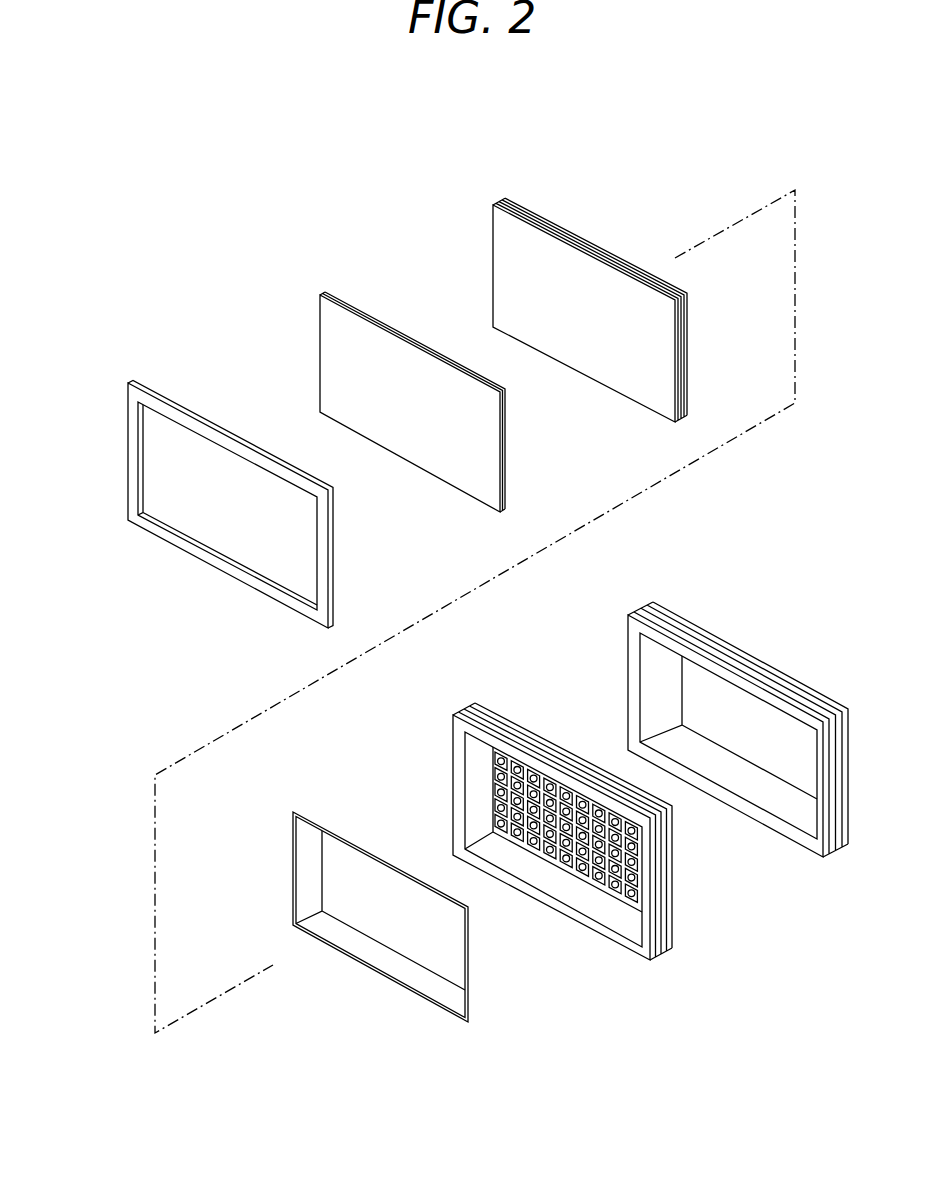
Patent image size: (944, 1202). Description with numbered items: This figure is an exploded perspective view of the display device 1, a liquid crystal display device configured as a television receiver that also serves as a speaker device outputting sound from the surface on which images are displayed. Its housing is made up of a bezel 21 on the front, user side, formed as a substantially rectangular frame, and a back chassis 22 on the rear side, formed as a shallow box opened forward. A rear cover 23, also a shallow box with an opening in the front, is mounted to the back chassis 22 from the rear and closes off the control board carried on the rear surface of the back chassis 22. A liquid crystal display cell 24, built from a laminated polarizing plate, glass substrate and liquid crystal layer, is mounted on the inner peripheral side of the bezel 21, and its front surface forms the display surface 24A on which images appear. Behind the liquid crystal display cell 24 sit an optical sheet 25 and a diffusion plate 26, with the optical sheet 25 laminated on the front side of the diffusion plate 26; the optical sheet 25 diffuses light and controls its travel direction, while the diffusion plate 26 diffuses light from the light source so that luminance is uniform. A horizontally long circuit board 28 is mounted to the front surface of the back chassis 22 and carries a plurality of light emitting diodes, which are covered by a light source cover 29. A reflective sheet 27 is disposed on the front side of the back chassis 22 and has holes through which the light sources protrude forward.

The display device 1 is at (250, 227).
The bezel 21 is at (128, 390).
The back chassis 22 is at (532, 811).
The rear cover 23 is at (667, 610).
The liquid crystal display cell 24 is at (363, 402).
The display surface 24A is at (322, 332).
The optical sheet 25 is at (562, 290).
The diffusion plate 26 is at (503, 208).
The reflective sheet 27 is at (313, 818).
The circuit board 28 is at (490, 762).
The light source cover 29 is at (493, 788).